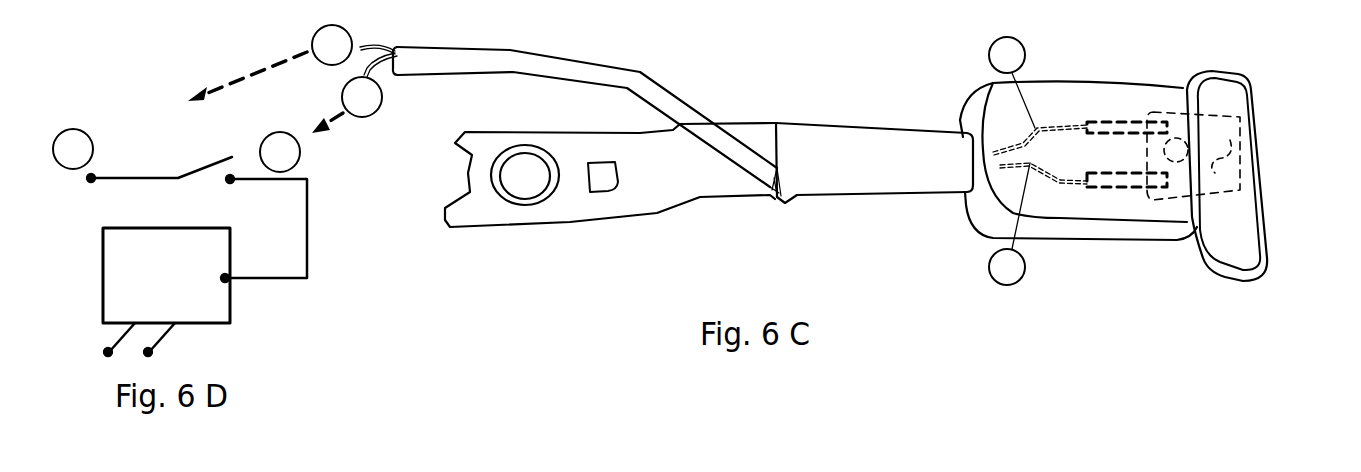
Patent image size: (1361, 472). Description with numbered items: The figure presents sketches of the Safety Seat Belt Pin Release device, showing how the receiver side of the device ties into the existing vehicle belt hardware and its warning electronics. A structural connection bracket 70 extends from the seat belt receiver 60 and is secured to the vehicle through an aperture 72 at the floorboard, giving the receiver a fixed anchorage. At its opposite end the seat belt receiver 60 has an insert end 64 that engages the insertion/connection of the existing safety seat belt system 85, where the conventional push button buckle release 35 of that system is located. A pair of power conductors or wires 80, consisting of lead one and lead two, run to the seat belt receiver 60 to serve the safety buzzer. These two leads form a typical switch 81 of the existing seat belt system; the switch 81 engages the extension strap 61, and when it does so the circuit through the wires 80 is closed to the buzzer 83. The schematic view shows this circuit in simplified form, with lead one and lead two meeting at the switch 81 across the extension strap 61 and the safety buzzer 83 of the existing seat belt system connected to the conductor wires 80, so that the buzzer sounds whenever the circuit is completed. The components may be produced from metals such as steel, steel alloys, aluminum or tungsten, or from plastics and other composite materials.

In FIG. 6C, the conventional push button buckle release 35 is at (942, 313).
In FIG. 6C, the seat belt receiver 60 is at (1093, 240).
In FIG. 6C, the extension strap 61 is at (1217, 157).
In FIG. 6D, the extension strap 61 is at (197, 167).
In FIG. 6C, the insert end 64 is at (1187, 87).
In FIG. 6C, the structural connection bracket 70 is at (590, 215).
In FIG. 6C, the aperture at floorboard of vehicle 72 is at (520, 187).
In FIG. 6C, the power conductors or wires 80 is at (603, 63).
In FIG. 6C, the switch 81 is at (1155, 227).
In FIG. 6D, the switch 81 is at (345, 247).
In FIG. 6D, the safety buzzer 83 is at (230, 310).
In FIG. 6C, the existing safety seat belt system 85 is at (1210, 90).